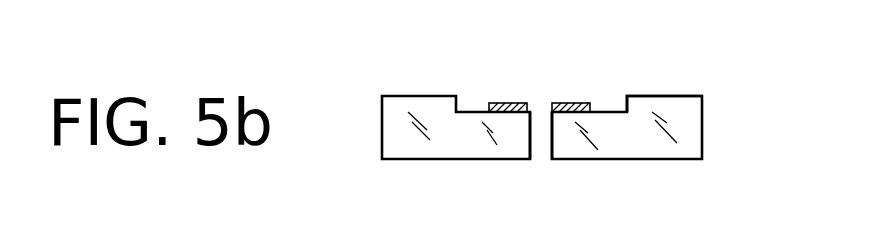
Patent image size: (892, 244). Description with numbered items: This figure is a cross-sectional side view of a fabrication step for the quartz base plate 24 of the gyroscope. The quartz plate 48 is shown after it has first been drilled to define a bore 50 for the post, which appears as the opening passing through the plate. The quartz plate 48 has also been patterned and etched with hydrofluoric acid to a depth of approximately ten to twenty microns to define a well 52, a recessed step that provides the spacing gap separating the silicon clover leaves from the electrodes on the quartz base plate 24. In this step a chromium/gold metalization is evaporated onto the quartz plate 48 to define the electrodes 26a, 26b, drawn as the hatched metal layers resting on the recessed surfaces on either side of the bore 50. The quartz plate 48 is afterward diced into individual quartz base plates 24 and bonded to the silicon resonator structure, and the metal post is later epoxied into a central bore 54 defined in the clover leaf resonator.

The quartz base plate 24 is at (567, 121).
The electrode 26a is at (481, 64).
The electrode 26b is at (484, 83).
The quartz plate 48 is at (693, 122).
The bore 50 is at (544, 146).
The well 52 is at (618, 101).
The central bore 54 is at (481, 64).